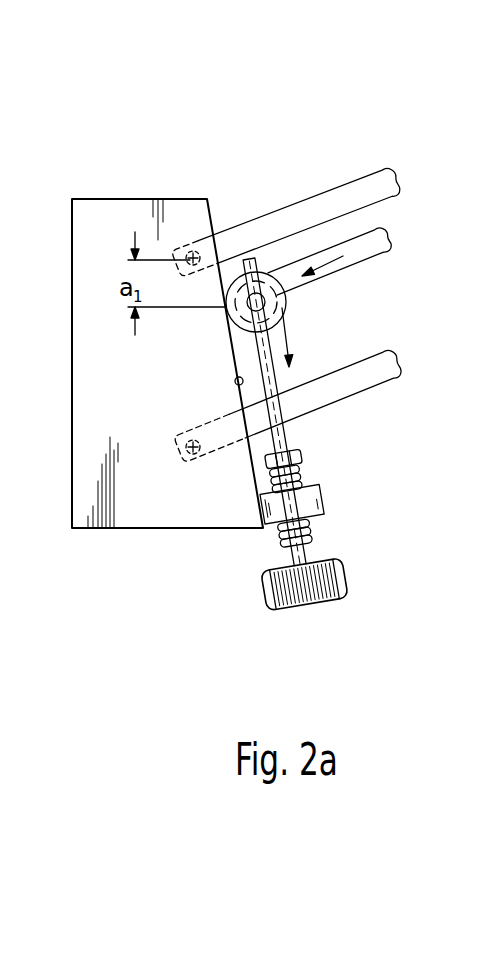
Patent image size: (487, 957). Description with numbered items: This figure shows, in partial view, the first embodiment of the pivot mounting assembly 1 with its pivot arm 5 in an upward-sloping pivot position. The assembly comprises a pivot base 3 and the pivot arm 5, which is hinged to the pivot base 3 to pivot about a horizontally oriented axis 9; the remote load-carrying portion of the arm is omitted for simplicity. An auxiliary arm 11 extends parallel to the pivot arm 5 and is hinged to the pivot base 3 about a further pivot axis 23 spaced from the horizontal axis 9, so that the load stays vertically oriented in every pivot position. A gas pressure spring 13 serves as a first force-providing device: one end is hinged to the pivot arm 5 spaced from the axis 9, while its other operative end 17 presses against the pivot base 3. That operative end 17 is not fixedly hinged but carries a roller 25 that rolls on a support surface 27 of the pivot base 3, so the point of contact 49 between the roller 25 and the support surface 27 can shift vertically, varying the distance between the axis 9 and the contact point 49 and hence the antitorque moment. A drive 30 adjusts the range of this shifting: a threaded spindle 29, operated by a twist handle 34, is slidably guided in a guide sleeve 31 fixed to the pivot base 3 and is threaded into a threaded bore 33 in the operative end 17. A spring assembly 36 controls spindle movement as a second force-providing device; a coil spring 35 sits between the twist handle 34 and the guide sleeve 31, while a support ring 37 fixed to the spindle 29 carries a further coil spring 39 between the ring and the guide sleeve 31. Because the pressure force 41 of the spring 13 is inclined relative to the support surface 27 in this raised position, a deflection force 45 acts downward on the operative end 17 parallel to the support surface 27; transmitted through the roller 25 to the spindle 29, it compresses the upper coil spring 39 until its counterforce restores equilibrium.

The pivot mounting assembly 1 is at (327, 110).
The pivot base 3 is at (93, 199).
The pivot arm 5 is at (367, 168).
The horizontally oriented axis 9 is at (193, 254).
The auxiliary arm 11 is at (406, 365).
The gas pressure spring 13 is at (396, 235).
The operative end 17 is at (378, 253).
The further pivot axis 23 is at (186, 454).
The roller 25 is at (287, 303).
The support surface 27 is at (235, 381).
The threaded spindle 29 is at (284, 440).
The drive 30 is at (402, 520).
The guide sleeve 31 is at (323, 497).
The threaded bore 33 is at (227, 312).
The twist handle 34 is at (306, 613).
The coil spring 35 is at (288, 560).
The spring assembly 36 is at (395, 562).
The support ring 37 is at (299, 456).
The further coil spring 39 is at (301, 476).
The pressure force 41 is at (330, 258).
The deflection force 45 is at (288, 336).
The point of contact 49 is at (224, 307).